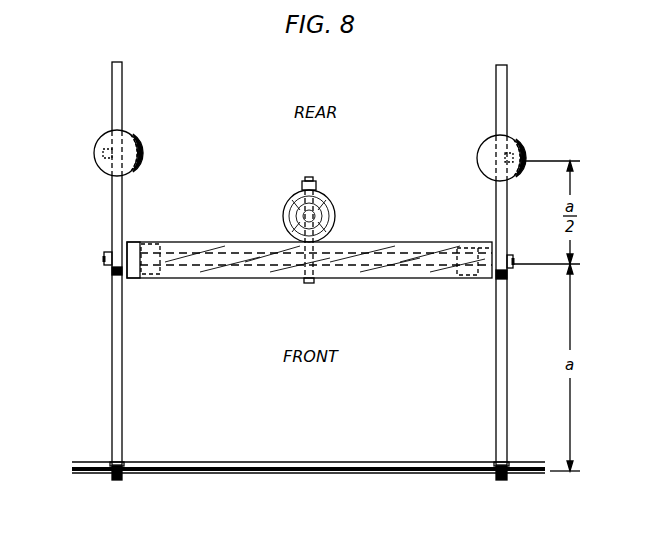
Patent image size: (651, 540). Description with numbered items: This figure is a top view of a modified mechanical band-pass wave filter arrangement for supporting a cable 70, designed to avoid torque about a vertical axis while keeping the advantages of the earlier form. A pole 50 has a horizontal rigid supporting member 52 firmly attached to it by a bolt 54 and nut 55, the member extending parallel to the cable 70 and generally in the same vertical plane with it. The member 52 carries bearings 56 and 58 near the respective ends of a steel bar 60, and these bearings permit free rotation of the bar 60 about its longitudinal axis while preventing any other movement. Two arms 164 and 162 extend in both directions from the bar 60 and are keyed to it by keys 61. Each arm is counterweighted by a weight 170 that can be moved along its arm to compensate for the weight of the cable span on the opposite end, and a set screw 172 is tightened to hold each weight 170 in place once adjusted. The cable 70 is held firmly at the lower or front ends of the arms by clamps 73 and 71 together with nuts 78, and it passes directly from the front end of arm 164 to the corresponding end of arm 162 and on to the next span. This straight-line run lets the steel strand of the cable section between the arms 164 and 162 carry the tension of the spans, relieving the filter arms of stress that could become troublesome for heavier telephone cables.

The pole 50 is at (328, 200).
The horizontal rigid supporting member 52 is at (365, 242).
The bolt 54 is at (308, 180).
The nut 55 is at (302, 185).
The bearing 56 is at (138, 242).
The bearing 58 is at (470, 248).
The steel bar 60 is at (104, 262).
The key 61 is at (104, 256).
The cable 70 is at (85, 462).
The clamp 71 is at (503, 482).
The clamp 73 is at (113, 482).
The nut 78 is at (120, 482).
The arm 162 is at (507, 77).
The arm 164 is at (112, 77).
The weight 170 is at (106, 138).
The set screw 172 is at (104, 156).